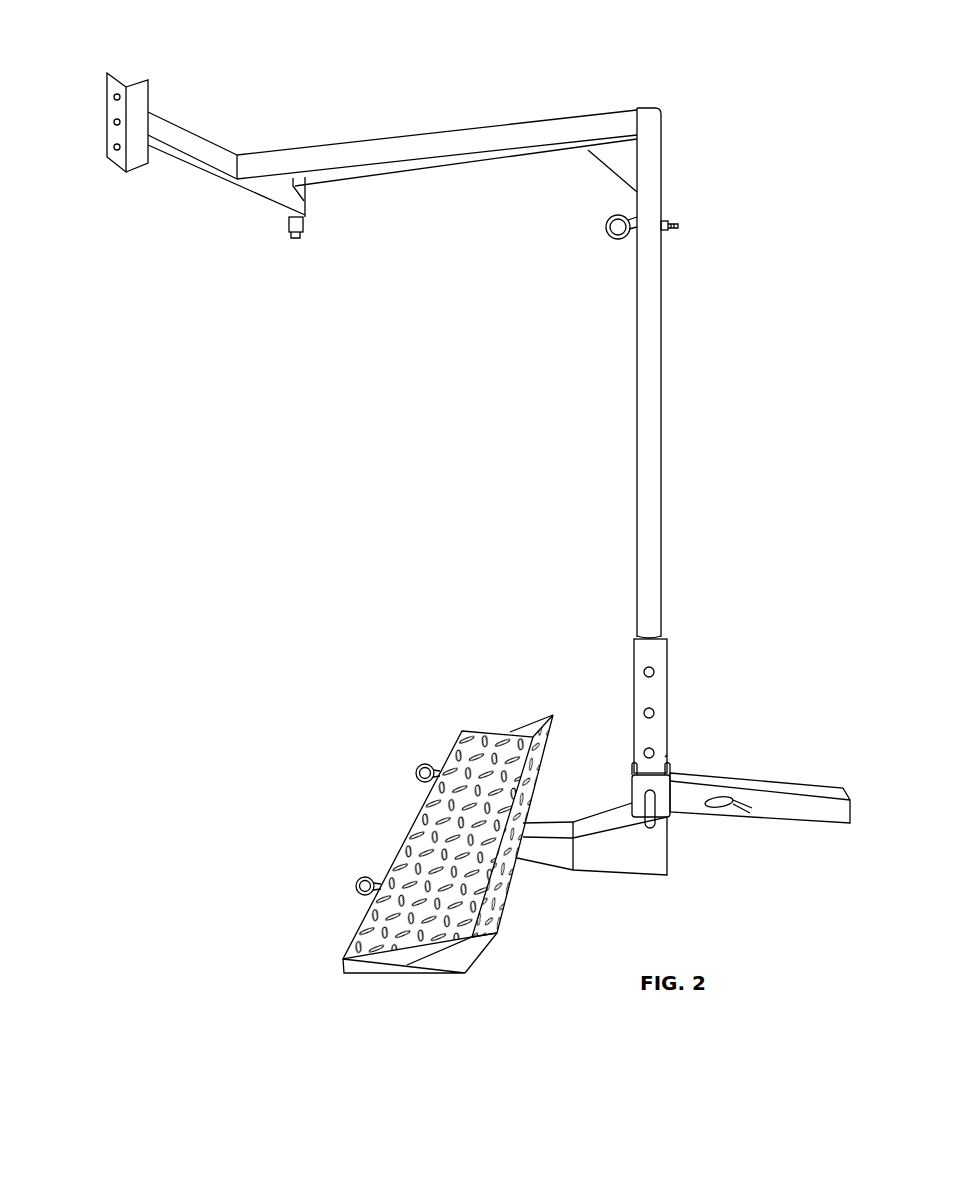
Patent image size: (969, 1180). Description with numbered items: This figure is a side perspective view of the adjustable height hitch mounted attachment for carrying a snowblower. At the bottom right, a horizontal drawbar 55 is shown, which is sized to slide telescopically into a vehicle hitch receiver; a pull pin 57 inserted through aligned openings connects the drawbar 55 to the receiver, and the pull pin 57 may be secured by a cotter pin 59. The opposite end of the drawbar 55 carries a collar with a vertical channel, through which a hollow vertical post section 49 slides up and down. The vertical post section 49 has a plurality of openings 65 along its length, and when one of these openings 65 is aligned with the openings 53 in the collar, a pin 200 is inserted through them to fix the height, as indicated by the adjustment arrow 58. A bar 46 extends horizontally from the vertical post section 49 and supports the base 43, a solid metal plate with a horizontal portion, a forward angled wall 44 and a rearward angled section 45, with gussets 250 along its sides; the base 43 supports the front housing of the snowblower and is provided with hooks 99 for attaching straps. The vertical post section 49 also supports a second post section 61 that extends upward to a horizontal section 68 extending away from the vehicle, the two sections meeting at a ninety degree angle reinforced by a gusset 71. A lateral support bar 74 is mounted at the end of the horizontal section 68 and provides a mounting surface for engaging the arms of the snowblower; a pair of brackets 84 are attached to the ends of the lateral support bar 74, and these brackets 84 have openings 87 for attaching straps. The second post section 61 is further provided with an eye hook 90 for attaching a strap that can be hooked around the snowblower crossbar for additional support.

The base 43 is at (475, 745).
The forward angled wall 44 is at (497, 907).
The rearward angled section 45 is at (330, 967).
The horizontal bar 46 is at (530, 845).
The vertical post section 49 is at (657, 653).
The openings 53 is at (627, 767).
The drawbar 55 is at (807, 802).
The pull pin 57 is at (735, 802).
The height adjustment 58 is at (665, 757).
The cotter pin 59 is at (708, 795).
The second post section 61 is at (650, 423).
The openings 65 is at (645, 668).
The horizontal section 68 is at (433, 145).
The gusset 71 is at (615, 157).
The lateral support bar 74 is at (187, 138).
The brackets 84 is at (137, 90).
The openings 87 is at (112, 122).
The eye hook 90 is at (606, 251).
The hooks 99 is at (420, 765).
The pin 200 is at (650, 807).
The gussets 250 is at (448, 955).